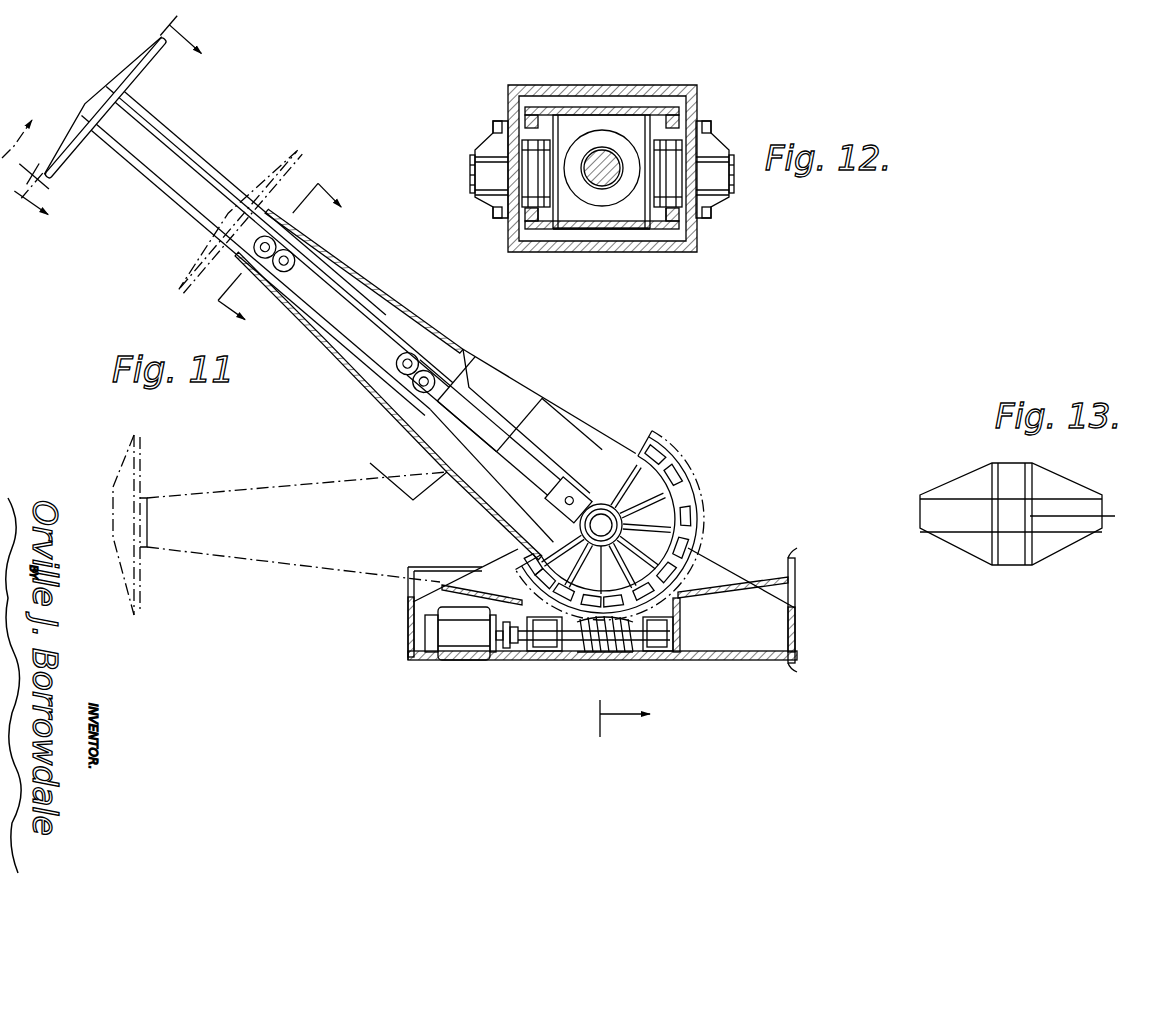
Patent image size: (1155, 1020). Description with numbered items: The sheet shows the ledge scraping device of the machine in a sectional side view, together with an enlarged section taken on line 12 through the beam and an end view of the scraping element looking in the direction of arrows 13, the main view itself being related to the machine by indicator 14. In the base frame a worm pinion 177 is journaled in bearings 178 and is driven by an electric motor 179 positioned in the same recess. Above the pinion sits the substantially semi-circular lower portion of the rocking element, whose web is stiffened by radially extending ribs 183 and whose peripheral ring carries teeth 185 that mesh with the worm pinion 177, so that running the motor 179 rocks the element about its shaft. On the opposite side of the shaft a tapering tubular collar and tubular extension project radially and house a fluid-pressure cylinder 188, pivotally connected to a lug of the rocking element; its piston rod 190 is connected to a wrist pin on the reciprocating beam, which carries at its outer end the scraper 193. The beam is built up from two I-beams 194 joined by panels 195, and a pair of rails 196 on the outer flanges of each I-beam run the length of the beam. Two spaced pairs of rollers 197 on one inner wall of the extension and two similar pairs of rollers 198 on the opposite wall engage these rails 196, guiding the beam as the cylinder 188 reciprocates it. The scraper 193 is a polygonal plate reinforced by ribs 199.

In FIG. 11, the section line 12— 12 is at (292, 260).
In FIG. 11, the arrows 13— 13 is at (113, 123).
In FIG. 11, the section line 11—11 reference / figure indicator 14 is at (326, 425).
In FIG. 11, the worm pinion 177 is at (593, 653).
In FIG. 11, the bearings 178 is at (545, 653).
In FIG. 11, the electric motor 179 is at (457, 656).
In FIG. 11, the reinforcing radially extending ribs 183 is at (645, 538).
In FIG. 11, the teeth 185 is at (633, 627).
In FIG. 11, the fluid-pressure cylinder 188 is at (463, 403).
In FIG. 12, the fluid-pressure cylinder 188 is at (612, 130).
In FIG. 12, the piston rod 190 is at (603, 150).
In FIG. 13, the scraper 193 is at (1060, 478).
In FIG. 12, the I-beams 194 is at (570, 224).
In FIG. 12, the joining panels 195 is at (607, 231).
In FIG. 12, the rails 196 is at (527, 120).
In FIG. 11, the rollers 197 is at (270, 246).
In FIG. 12, the rollers 197 is at (676, 168).
In FIG. 12, the rollers 198 is at (528, 163).
In FIG. 13, the reinforcing ribs 199 is at (1090, 518).